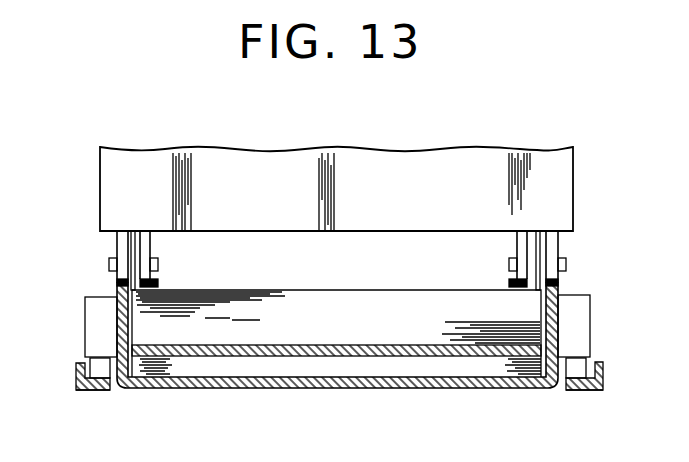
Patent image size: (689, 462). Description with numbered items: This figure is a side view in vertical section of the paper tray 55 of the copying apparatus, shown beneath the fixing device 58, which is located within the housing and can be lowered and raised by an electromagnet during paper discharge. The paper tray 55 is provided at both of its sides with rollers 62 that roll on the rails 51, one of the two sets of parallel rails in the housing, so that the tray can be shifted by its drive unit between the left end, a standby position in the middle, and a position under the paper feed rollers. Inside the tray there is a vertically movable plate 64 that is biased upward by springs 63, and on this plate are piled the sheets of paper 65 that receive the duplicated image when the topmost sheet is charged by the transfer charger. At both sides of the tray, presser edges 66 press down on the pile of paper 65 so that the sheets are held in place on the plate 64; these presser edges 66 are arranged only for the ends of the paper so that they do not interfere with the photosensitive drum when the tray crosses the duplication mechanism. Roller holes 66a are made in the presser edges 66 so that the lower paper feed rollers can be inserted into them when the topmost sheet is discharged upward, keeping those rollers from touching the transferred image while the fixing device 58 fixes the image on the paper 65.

The fixing device 58 is at (292, 170).
The paper tray 55 is at (243, 390).
The vertically movable plate 64 is at (331, 358).
The springs 63 is at (163, 390).
The sheets of paper 65 is at (423, 360).
The roller holes 66a is at (116, 281).
The presser edges 66 is at (160, 285).
The rollers 62 is at (80, 364).
The rails 51 is at (96, 392).